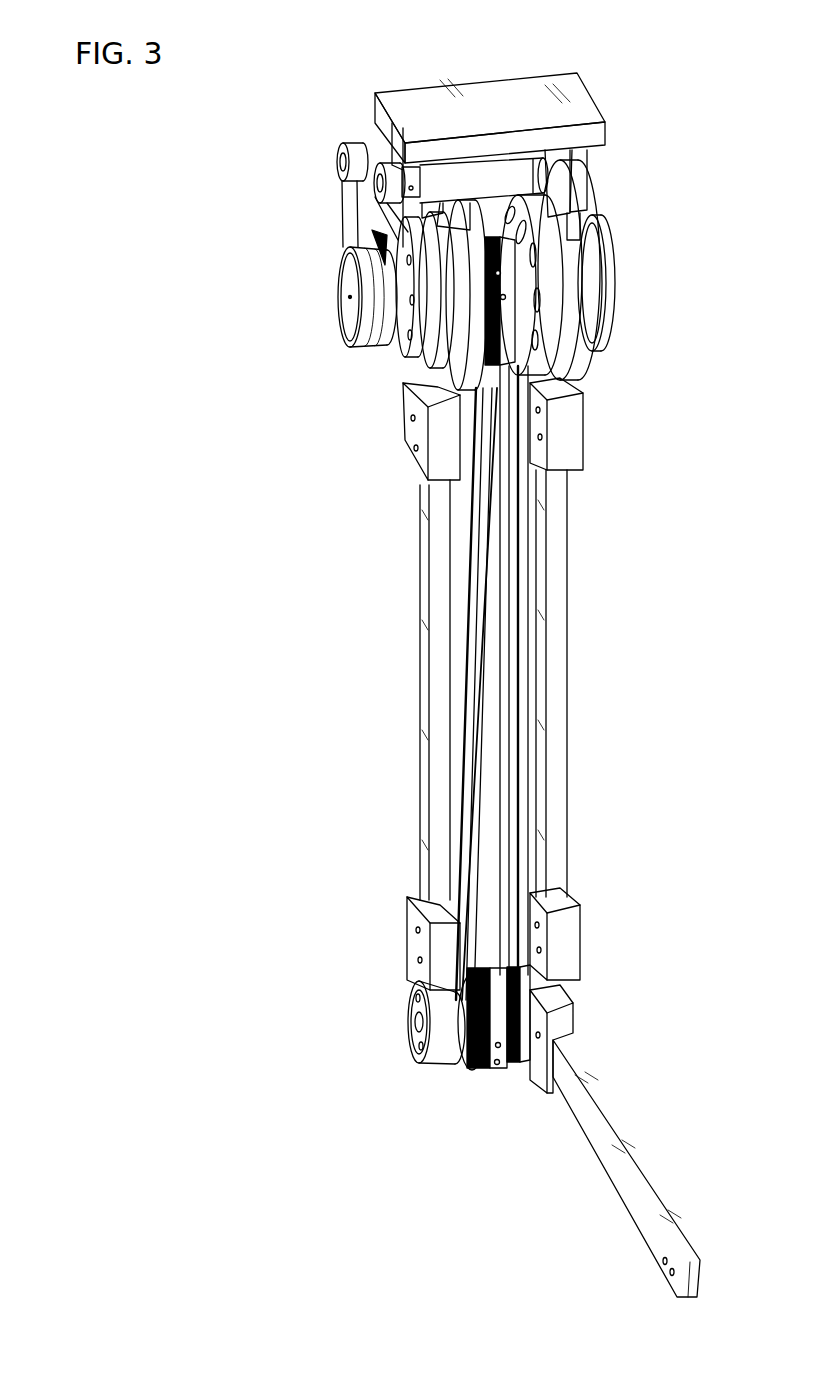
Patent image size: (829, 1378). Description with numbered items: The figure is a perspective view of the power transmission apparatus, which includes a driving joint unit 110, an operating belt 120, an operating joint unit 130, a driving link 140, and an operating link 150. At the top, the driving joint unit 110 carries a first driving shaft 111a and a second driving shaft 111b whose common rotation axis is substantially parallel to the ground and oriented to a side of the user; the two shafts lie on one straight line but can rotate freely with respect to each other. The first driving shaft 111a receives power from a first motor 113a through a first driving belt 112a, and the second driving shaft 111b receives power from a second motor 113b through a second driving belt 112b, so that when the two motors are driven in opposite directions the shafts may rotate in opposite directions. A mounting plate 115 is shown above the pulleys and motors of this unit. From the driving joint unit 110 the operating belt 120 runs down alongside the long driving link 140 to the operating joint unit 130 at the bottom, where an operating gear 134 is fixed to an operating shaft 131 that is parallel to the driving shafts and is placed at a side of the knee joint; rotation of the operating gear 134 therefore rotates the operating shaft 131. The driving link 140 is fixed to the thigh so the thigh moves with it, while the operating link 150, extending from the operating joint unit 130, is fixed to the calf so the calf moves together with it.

The driving joint unit 110 is at (257, 294).
The first driving shaft 111a is at (353, 317).
The second driving shaft 111b is at (396, 347).
The first driving belt 112a is at (346, 203).
The second driving belt 112b is at (381, 212).
The first motor 113a is at (339, 148).
The second motor 113b is at (393, 165).
The mounting plate 115 is at (520, 93).
The operating belt 120 is at (505, 660).
The operating joint unit 130 is at (389, 1014).
The operating shaft 131 is at (416, 1030).
The operating gear 134 is at (508, 1065).
The driving link 140 is at (427, 638).
The operating link 150 is at (652, 1193).